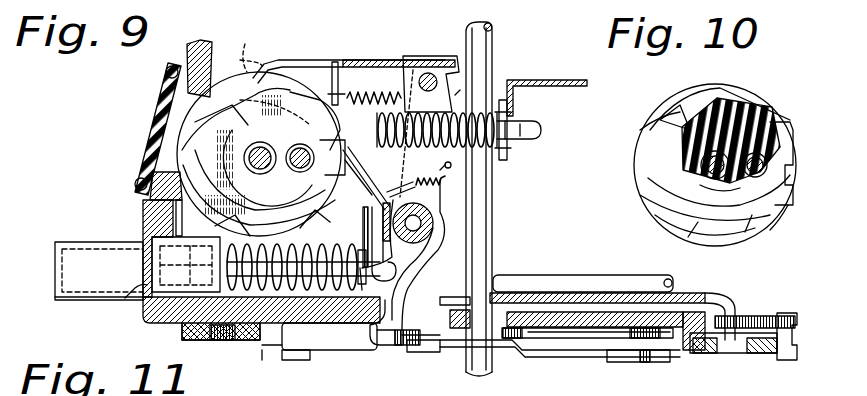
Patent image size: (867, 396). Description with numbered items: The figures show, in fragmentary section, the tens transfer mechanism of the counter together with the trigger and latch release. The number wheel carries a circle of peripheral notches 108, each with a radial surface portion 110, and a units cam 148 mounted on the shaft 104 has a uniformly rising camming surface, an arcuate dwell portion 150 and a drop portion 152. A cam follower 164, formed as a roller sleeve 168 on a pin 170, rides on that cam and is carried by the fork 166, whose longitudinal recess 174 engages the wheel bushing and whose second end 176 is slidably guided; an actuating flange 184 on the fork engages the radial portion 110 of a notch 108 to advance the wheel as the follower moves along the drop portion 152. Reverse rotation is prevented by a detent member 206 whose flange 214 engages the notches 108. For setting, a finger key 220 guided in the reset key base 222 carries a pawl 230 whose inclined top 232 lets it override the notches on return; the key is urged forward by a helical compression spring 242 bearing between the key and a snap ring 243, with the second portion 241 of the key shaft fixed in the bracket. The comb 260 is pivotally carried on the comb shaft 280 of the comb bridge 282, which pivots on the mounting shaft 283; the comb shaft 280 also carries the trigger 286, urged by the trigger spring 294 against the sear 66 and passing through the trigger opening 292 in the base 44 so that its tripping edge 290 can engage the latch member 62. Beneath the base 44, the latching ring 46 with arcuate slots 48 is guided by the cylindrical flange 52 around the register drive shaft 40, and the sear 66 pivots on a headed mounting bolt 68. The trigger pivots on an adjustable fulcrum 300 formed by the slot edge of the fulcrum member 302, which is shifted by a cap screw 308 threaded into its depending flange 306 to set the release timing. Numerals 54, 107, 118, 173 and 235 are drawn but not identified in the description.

In FIG. 9, the register drive shaft 40 is at (482, 55).
In FIG. 9, the base 44 is at (160, 321).
In FIG. 9, the latching ring 46 is at (195, 340).
In FIG. 9, the arcuate slots 48 is at (225, 342).
In FIG. 9, the cylindrical flange 52 is at (270, 345).
In FIG. 9, the member 54 is at (262, 358).
In FIG. 9, the latch member 62 is at (448, 345).
In FIG. 9, the sear 66 is at (527, 353).
In FIG. 9, the headed mounting bolt 68 is at (627, 362).
In FIG. 10, the shaft 104 is at (655, 172).
In FIG. 9, the member 107 is at (772, 390).
In FIG. 9, the peripheral notches 108 is at (324, 60).
In FIG. 10, the peripheral notches 108 is at (668, 102).
In FIG. 9, the radial surface portion 110 is at (292, 80).
In FIG. 10, the radial surface portion 110 is at (640, 130).
In FIG. 10, the pin 118 is at (640, 196).
In FIG. 10, the units cam 148 is at (745, 90).
In FIG. 10, the dwell portion 150 is at (775, 112).
In FIG. 10, the drop portion 152 is at (775, 236).
In FIG. 9, the cam follower 164 is at (373, 104).
In FIG. 10, the cam follower 164 is at (745, 186).
In FIG. 9, the fork 166 is at (368, 215).
In FIG. 9, the roller sleeve 168 is at (218, 152).
In FIG. 9, the pin 170 is at (312, 140).
In FIG. 9, the bracket 173 is at (548, 80).
In FIG. 9, the longitudinal recess 174 is at (182, 132).
In FIG. 9, the second end 176 is at (540, 128).
In FIG. 9, the actuating flange 184 is at (243, 48).
In FIG. 9, the detent member 206 is at (368, 194).
In FIG. 9, the flange 214 is at (350, 64).
In FIG. 9, the finger key 220 is at (80, 288).
In FIG. 9, the reset key base 222 is at (125, 298).
In FIG. 9, the pawl 230 is at (152, 241).
In FIG. 9, the top of the pawl 232 is at (150, 222).
In FIG. 9, the member 235 is at (460, 92).
In FIG. 9, the second portion 241 is at (440, 250).
In FIG. 9, the helical compression spring 242 is at (310, 256).
In FIG. 9, the snap ring 243 is at (329, 341).
In FIG. 9, the comb 260 is at (392, 58).
In FIG. 9, the comb shaft 280 is at (430, 75).
In FIG. 9, the comb bridge 282 is at (440, 192).
In FIG. 9, the mounting shaft 283 is at (433, 224).
In FIG. 9, the trigger 286 is at (455, 174).
In FIG. 9, the tripping edge 290 is at (410, 352).
In FIG. 9, the trigger opening 292 is at (385, 345).
In FIG. 9, the trigger spring 294 is at (508, 156).
In FIG. 9, the adjustable fulcrum 300 is at (440, 266).
In FIG. 9, the fulcrum member 302 is at (560, 276).
In FIG. 9, the depending flange 306 is at (735, 306).
In FIG. 9, the cap screw 308 is at (760, 355).